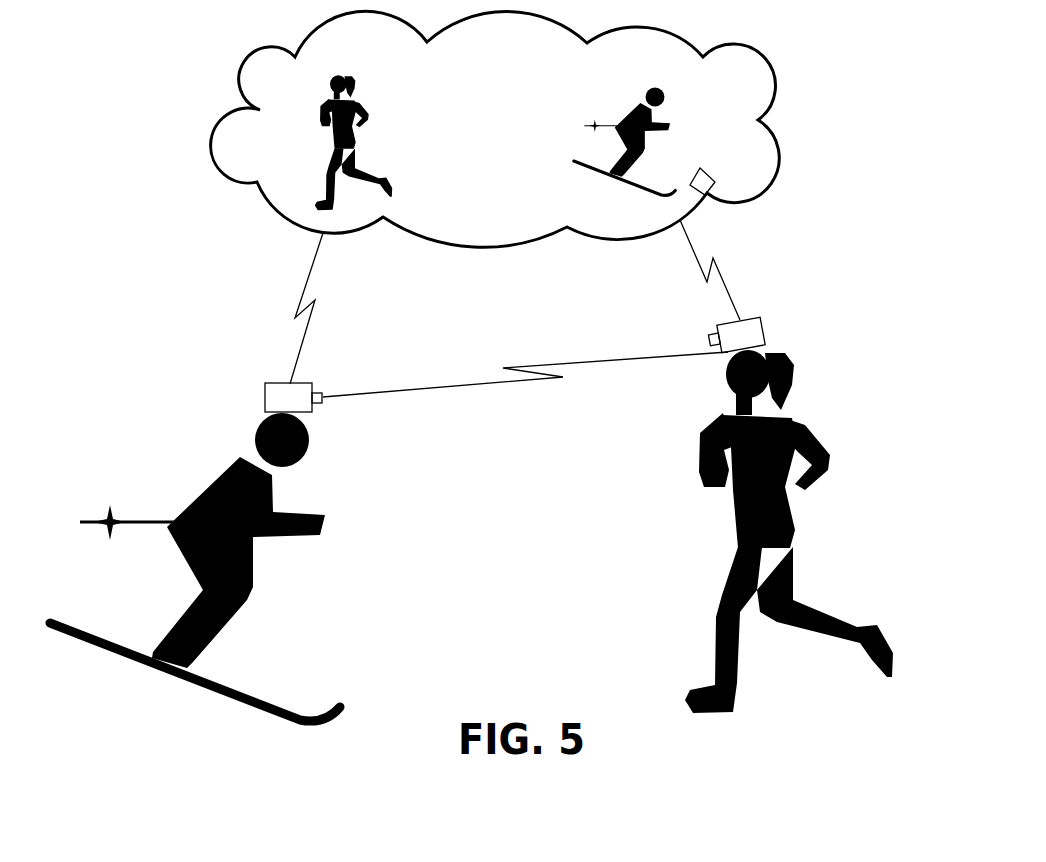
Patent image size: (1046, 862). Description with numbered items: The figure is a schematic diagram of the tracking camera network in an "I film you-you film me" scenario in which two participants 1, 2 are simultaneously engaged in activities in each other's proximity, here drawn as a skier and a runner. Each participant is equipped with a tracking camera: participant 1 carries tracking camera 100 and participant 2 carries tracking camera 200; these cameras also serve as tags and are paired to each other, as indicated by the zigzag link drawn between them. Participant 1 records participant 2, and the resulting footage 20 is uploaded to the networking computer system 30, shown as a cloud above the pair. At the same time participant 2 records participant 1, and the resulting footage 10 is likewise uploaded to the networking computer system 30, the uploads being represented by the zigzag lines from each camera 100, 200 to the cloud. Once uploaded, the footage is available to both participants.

The participant 1 is at (236, 462).
The participant 2 is at (822, 441).
The footage 10 is at (648, 96).
The footage 20 is at (357, 105).
The networking computer system 30 is at (785, 74).
The tracking camera 100 is at (265, 396).
The tracking camera 200 is at (767, 326).